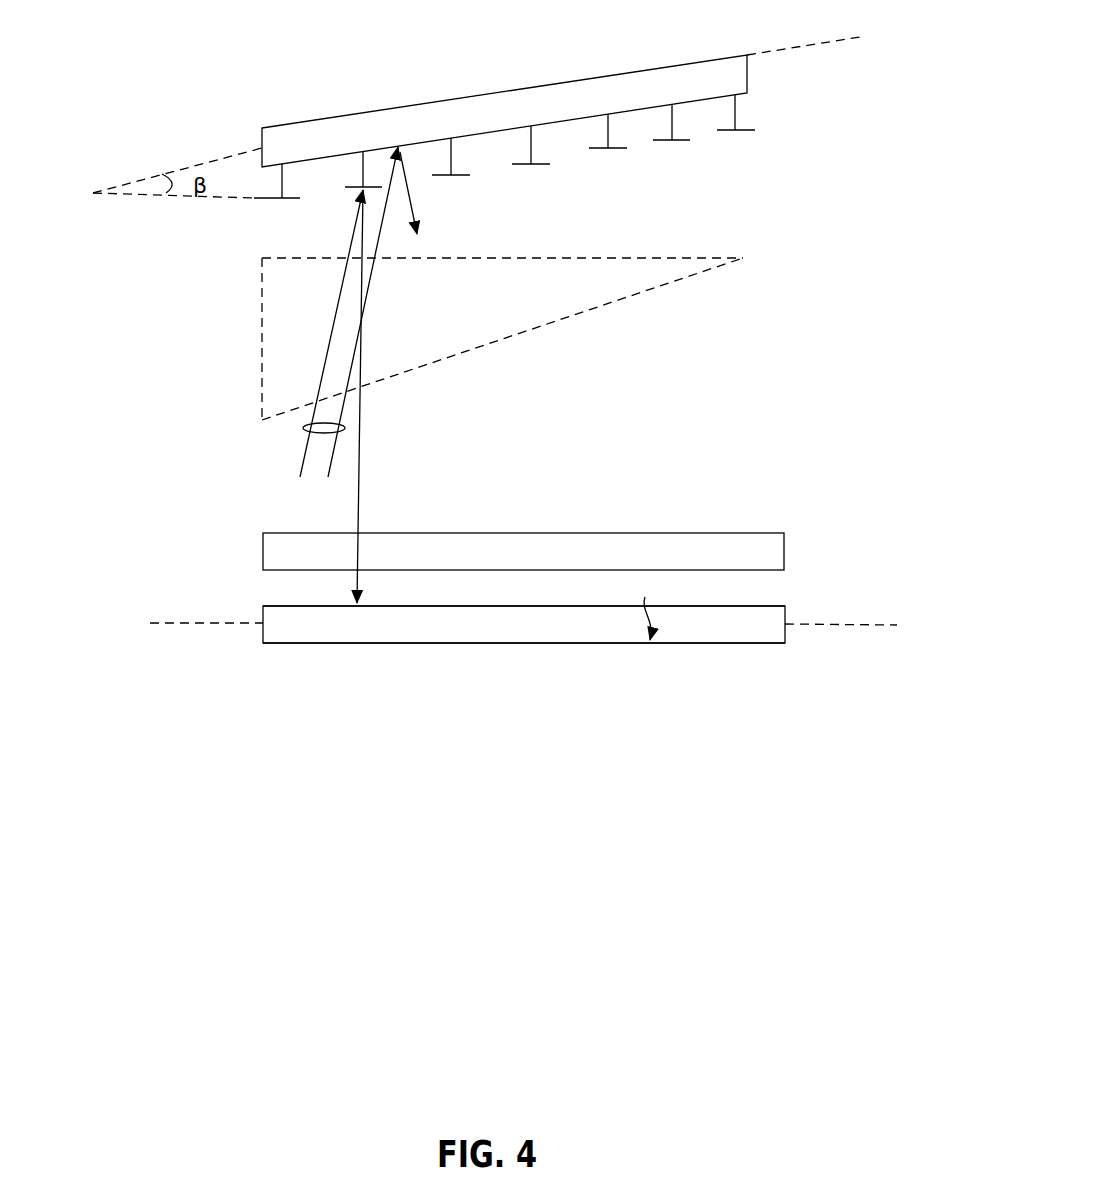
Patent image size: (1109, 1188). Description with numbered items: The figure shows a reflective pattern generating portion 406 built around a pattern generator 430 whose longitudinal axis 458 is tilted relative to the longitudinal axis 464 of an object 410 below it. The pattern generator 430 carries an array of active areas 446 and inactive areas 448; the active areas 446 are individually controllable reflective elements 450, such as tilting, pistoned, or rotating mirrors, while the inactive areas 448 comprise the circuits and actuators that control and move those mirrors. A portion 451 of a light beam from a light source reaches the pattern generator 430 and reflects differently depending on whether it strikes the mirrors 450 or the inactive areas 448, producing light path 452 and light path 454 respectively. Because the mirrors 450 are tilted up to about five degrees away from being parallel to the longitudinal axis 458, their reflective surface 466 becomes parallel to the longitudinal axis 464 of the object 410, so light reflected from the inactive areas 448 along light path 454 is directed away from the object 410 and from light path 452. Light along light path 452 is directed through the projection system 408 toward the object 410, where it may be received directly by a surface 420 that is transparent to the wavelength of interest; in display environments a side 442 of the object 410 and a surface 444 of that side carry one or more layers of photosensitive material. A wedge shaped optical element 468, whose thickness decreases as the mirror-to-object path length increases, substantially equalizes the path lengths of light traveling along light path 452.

The pattern generating portion 406 is at (148, 71).
The pattern generator 430 is at (747, 70).
The longitudinal axis of pattern generator 458 is at (827, 41).
The inactive areas 448 is at (568, 136).
The active areas 446 is at (653, 154).
The reflective surface 466 is at (713, 136).
The individually controllable reflective elements 450 is at (745, 132).
The light path 454 is at (410, 193).
The optical element 468 is at (743, 258).
The portion of a light beam 451 is at (330, 465).
The light path 452 is at (361, 435).
The projection system 408 is at (568, 532).
The object 410 is at (785, 610).
The surface of object 420 is at (756, 603).
The surface of side 444 is at (648, 606).
The side of object 442 is at (787, 647).
The longitudinal axis of object 464 is at (547, 625).